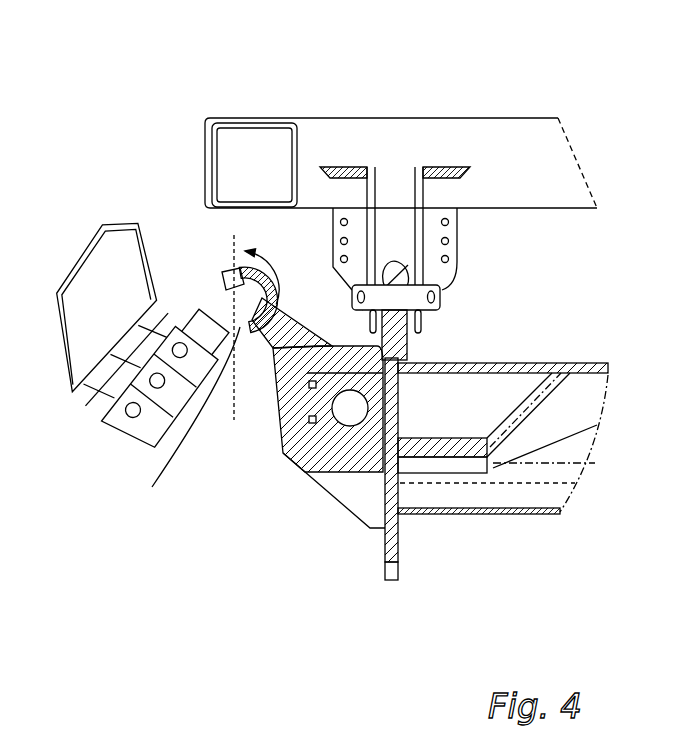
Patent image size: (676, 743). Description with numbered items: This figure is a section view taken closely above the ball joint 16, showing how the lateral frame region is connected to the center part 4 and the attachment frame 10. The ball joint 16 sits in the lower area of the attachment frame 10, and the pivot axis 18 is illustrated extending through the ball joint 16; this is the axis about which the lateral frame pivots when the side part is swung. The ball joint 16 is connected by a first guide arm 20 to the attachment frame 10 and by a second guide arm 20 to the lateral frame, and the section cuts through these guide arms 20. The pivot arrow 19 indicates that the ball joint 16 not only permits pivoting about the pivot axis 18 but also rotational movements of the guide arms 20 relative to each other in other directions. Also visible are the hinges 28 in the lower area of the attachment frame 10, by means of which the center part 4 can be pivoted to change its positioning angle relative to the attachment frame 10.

The center part 4 is at (498, 133).
The attachment frame 10 is at (550, 492).
The ball joint 16 is at (232, 283).
The pivot axis 18 is at (181, 434).
The pivot arrow 19 is at (265, 258).
The guide arm 20 is at (97, 300).
The hinge 28 is at (430, 313).